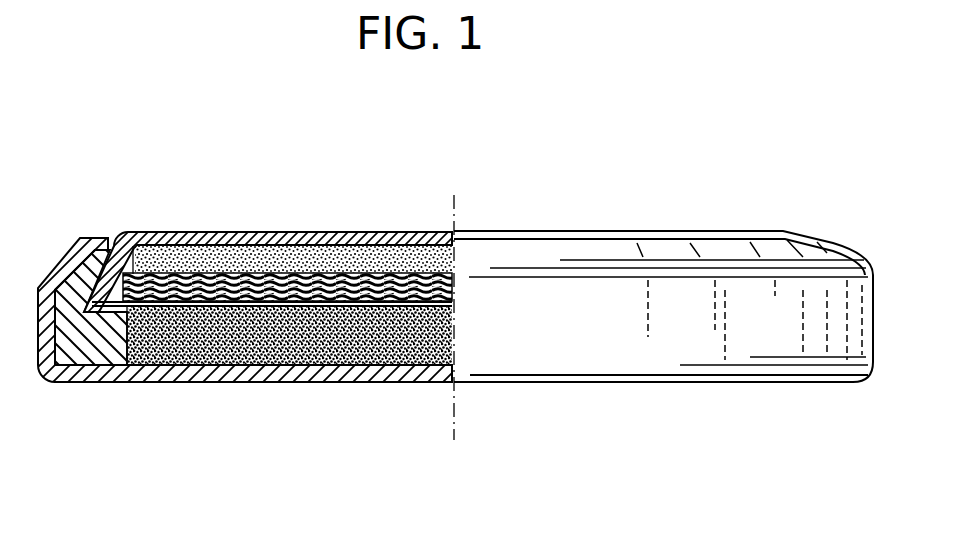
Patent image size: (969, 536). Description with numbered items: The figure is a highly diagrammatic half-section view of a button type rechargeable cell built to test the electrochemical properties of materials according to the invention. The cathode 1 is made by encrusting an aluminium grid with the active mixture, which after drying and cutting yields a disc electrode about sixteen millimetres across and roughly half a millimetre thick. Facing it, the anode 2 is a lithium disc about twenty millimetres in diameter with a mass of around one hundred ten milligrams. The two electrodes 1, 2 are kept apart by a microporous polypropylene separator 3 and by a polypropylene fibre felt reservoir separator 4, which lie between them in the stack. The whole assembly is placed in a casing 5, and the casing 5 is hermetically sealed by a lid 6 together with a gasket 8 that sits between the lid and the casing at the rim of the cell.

The cathode 1 is at (230, 345).
The anode 2 is at (255, 262).
The microporous polypropylene separator 3 is at (300, 290).
The polypropylene fibre felt reservoir separator 4 is at (200, 285).
The casing 5 is at (162, 382).
The lid 6 is at (311, 242).
The gasket 8 is at (90, 347).